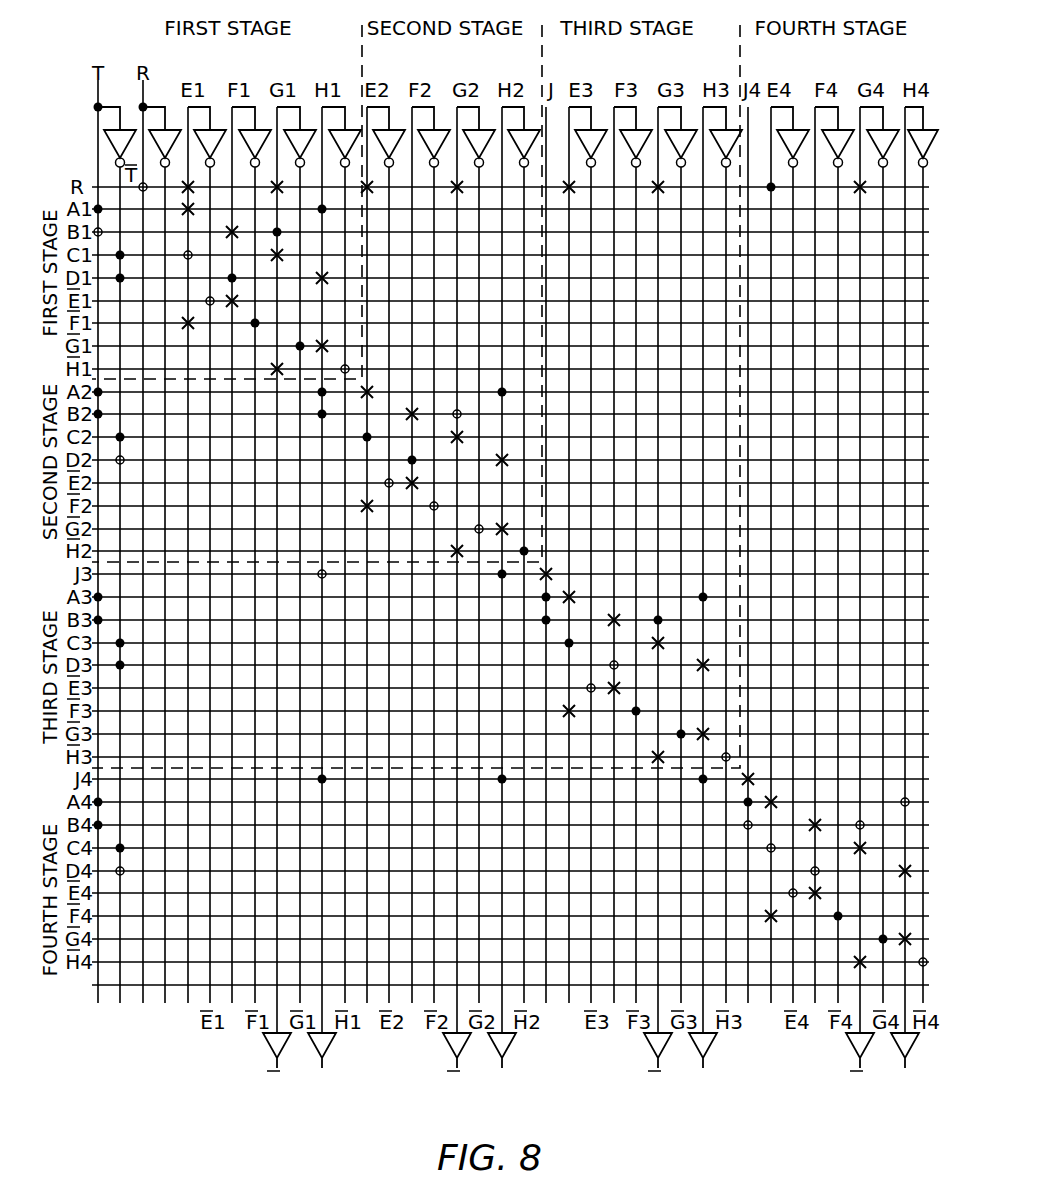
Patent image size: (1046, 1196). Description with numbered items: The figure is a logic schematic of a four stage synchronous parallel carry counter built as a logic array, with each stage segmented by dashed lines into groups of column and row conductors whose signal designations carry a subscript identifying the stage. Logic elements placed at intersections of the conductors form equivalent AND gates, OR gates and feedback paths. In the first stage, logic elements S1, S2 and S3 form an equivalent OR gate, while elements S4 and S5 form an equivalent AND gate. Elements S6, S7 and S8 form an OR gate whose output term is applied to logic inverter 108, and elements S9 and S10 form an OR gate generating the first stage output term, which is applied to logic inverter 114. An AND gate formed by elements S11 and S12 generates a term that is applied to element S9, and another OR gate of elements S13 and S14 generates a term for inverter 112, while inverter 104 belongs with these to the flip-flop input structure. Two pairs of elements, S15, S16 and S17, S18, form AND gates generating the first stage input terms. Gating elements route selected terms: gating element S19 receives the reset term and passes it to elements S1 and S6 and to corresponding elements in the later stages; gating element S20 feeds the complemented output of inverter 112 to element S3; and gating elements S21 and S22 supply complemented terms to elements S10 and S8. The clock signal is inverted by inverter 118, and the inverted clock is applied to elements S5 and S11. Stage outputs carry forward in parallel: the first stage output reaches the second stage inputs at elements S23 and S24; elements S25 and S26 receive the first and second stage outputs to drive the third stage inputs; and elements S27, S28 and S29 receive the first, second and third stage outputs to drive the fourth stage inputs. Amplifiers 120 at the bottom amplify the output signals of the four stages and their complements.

The inverter 104 is at (213, 134).
The logic inverter 108 is at (303, 134).
The inverter 112 is at (259, 134).
The logic inverter 114 is at (348, 134).
The inverter 118 is at (129, 136).
The amplifiers 120 is at (899, 1044).
The logic element S1 is at (198, 175).
The logic element S2 is at (202, 209).
The logic element S3 is at (202, 323).
The logic element S4 is at (205, 255).
The logic element S5 is at (135, 255).
The logic element S6 is at (291, 187).
The logic element S7 is at (291, 255).
The logic element S8 is at (291, 369).
The logic element S9 is at (336, 278).
The logic element S10 is at (343, 339).
The logic element S11 is at (142, 278).
The logic element S12 is at (254, 278).
The logic element S13 is at (252, 232).
The logic element S14 is at (252, 301).
The logic element S15 is at (120, 209).
The logic element S16 is at (344, 209).
The logic element S17 is at (120, 232).
The logic element S18 is at (299, 232).
The gating element S19 is at (162, 197).
The gating element S20 is at (277, 323).
The gating element S21 is at (304, 338).
The gating element S22 is at (366, 369).
The logic element S23 is at (270, 342).
The logic element S24 is at (344, 414).
The logic element S25 is at (342, 583).
The logic element S26 is at (523, 584).
The logic element S27 is at (343, 789).
The logic element S28 is at (523, 789).
The logic element S29 is at (724, 789).